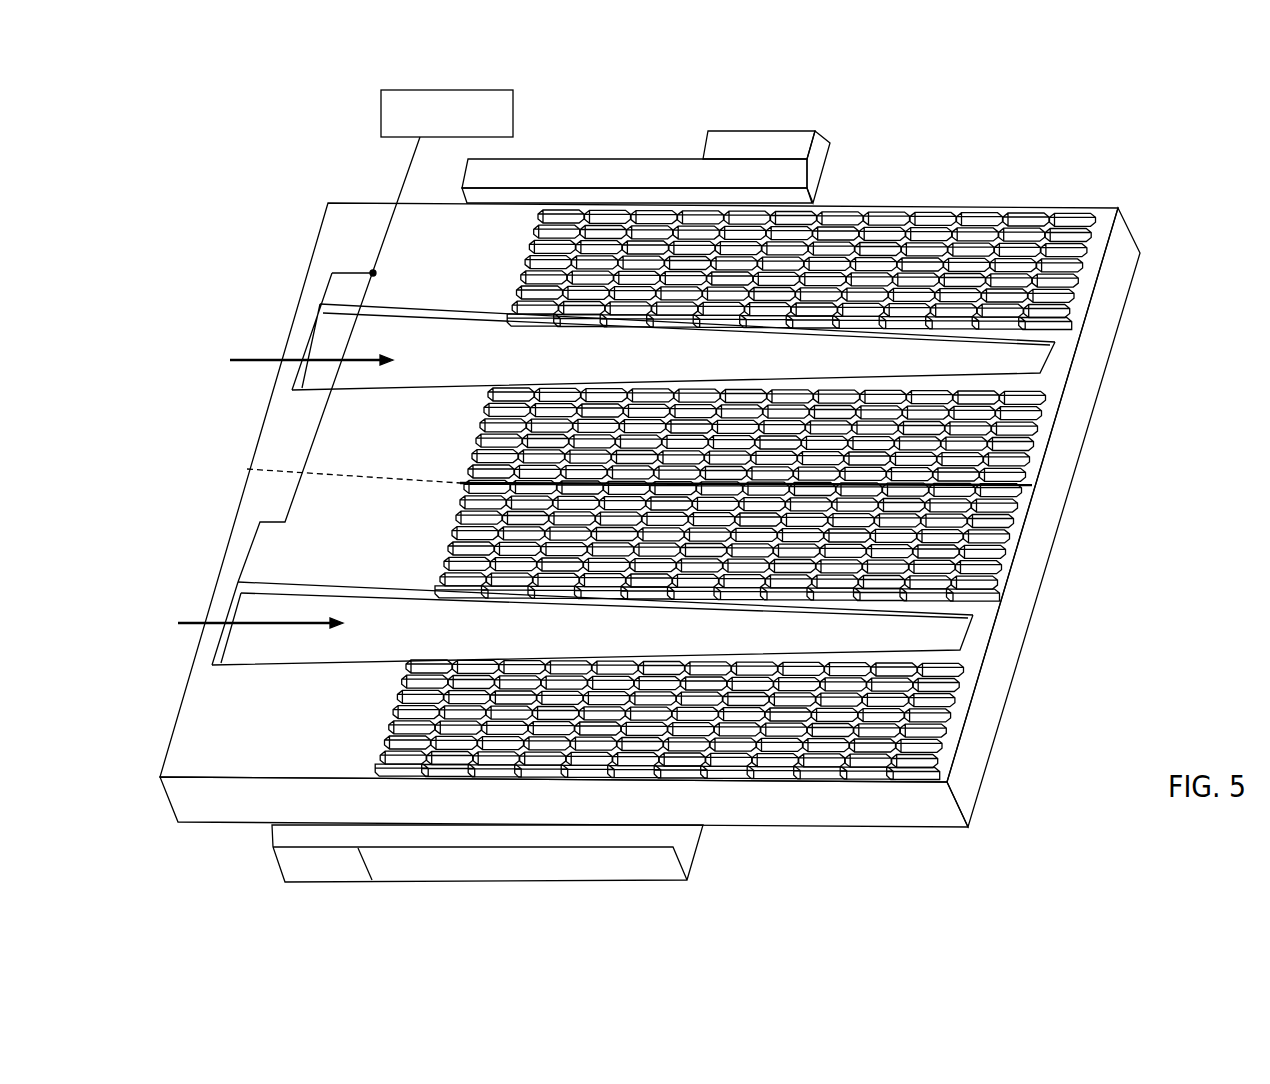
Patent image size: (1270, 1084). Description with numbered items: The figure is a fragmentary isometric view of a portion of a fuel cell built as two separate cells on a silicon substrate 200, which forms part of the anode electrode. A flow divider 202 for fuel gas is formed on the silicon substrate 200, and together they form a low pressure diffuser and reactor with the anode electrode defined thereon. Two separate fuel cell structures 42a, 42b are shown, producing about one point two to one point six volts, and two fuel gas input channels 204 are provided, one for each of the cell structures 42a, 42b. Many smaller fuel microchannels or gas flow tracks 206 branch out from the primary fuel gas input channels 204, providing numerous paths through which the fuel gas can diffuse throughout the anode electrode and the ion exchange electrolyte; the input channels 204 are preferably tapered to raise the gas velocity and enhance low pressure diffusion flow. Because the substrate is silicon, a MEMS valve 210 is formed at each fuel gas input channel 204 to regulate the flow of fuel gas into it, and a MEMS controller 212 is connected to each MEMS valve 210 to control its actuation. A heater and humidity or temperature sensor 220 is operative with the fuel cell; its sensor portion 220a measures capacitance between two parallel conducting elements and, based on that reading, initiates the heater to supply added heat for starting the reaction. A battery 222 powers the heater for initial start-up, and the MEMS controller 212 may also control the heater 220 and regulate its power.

The silicon substrate 200 is at (903, 813).
The flow divider 202 is at (230, 468).
The fuel gas input channel 204 is at (460, 355).
The fuel microchannels 206 is at (1067, 293).
The MEMS valve 210 is at (290, 337).
The MEMS controller 212 is at (500, 90).
The heater and humidity or temperature sensor 220 is at (620, 158).
The humidity or temperature sensor portion 220a is at (312, 883).
The battery 222 is at (780, 131).
The first fuel cell structure 42a is at (852, 190).
The second fuel cell structure 42b is at (732, 796).